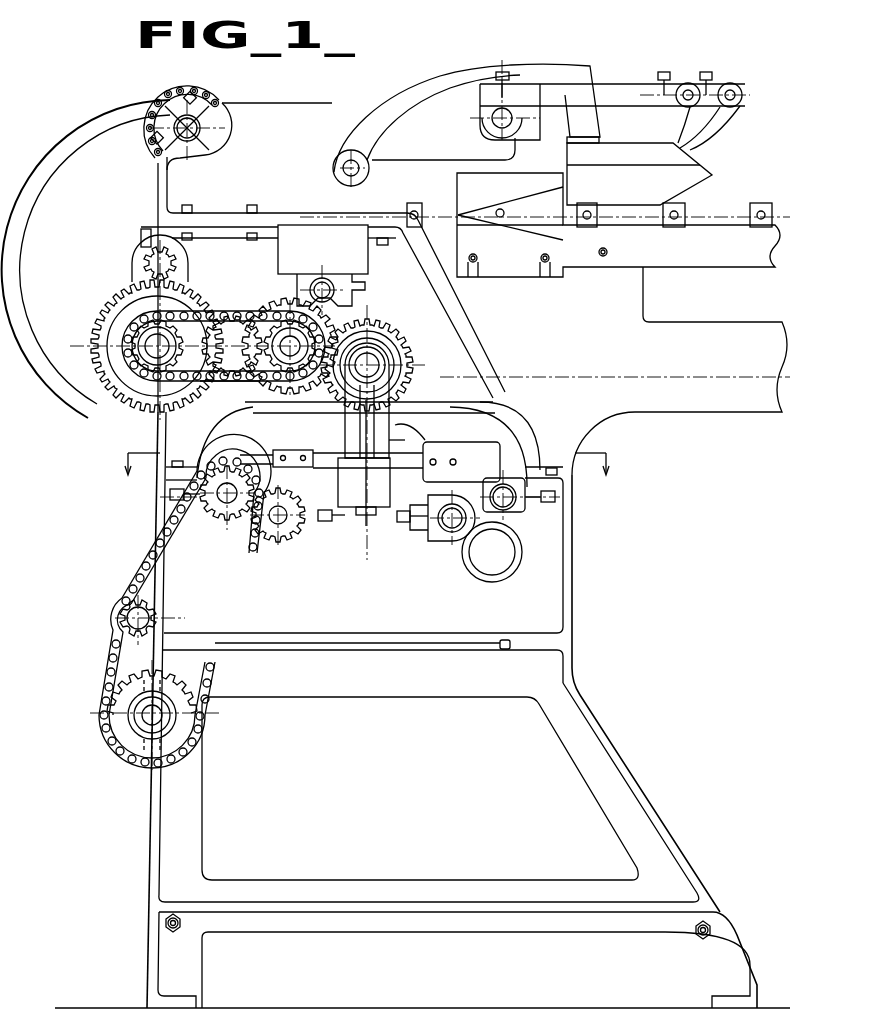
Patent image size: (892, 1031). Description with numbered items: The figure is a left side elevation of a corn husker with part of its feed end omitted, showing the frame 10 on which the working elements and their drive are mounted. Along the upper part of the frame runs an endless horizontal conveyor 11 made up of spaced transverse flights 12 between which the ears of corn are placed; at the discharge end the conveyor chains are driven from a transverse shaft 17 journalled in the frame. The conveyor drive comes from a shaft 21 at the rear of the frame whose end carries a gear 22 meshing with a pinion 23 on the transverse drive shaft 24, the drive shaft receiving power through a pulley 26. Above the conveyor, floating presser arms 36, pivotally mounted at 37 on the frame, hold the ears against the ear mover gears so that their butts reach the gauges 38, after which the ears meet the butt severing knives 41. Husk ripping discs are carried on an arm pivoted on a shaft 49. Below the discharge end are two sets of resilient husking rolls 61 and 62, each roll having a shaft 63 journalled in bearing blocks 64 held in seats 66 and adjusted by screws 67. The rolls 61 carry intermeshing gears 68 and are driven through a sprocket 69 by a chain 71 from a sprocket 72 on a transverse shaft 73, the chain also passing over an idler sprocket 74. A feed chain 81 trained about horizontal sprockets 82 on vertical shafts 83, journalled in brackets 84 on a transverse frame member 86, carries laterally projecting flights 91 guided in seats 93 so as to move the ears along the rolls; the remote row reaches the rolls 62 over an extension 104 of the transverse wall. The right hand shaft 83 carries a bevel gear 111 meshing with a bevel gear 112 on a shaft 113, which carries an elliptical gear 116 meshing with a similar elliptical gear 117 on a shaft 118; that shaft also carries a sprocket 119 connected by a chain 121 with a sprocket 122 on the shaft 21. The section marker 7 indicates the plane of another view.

The section line 7 is at (365, 452).
The frame 10 is at (574, 628).
The endless horizontal conveyor 11 is at (752, 205).
The flights 12 is at (750, 213).
The transverse shaft 17 is at (330, 285).
The shaft 21 is at (148, 338).
The gear 22 is at (100, 330).
The pinion 23 is at (146, 258).
The transverse drive shaft 24 is at (186, 256).
The pulley 26 is at (68, 145).
The floating presser arms 36 is at (716, 142).
The pivot 37 is at (490, 130).
The gauges 38 is at (700, 177).
The butt severing knives 41 is at (527, 192).
The shaft 49 is at (190, 138).
The husking rolls 61 is at (268, 476).
The husking rolls 62 is at (461, 462).
The shaft 63 is at (220, 520).
The bearing blocks 64 is at (527, 512).
The seats 66 is at (515, 480).
The adjusting screws 67 is at (170, 495).
The intermeshing gears 68 is at (275, 542).
The sprocket 69 is at (205, 515).
The chain 71 is at (115, 655).
The sprocket 72 is at (125, 742).
The transverse shaft 73 is at (128, 718).
The idler sprocket 74 is at (158, 612).
The chain 81 is at (379, 463).
The sprockets 82 is at (330, 445).
The shafts 83 is at (364, 518).
The brackets 84 is at (402, 378).
The transversely extending frame member 86 is at (408, 426).
The flights 91 is at (226, 425).
The seats 93 is at (364, 482).
The extension 104 is at (420, 412).
The bevel gear 111 is at (396, 382).
The bevel gear 112 is at (396, 348).
The shaft 113 is at (372, 358).
The elliptical gear 116 is at (362, 330).
The elliptical gear 117 is at (258, 305).
The shaft 118 is at (268, 380).
The sprocket 119 is at (282, 318).
The chain 121 is at (238, 320).
The sprocket 122 is at (223, 322).